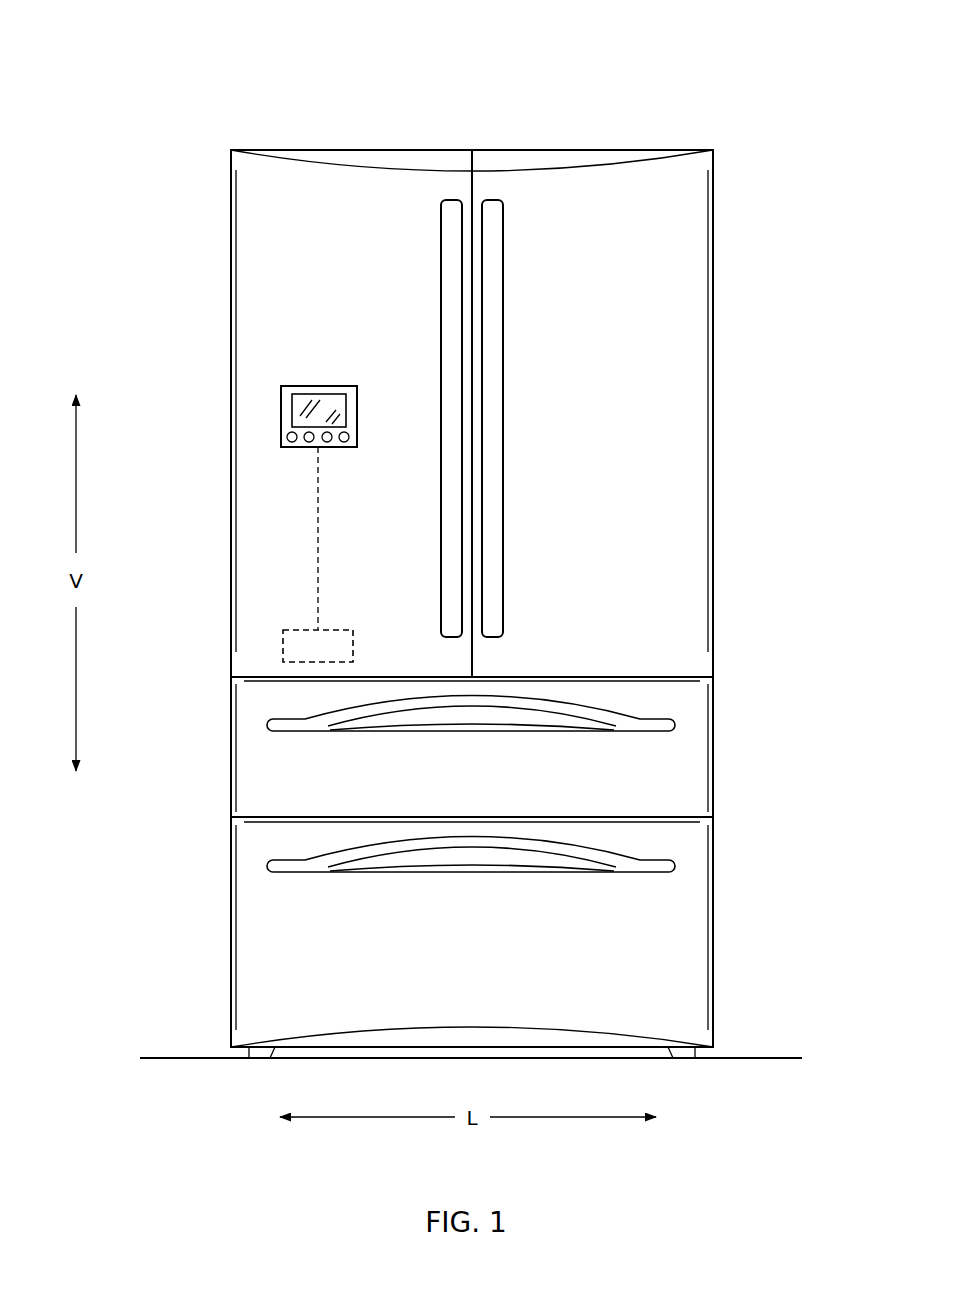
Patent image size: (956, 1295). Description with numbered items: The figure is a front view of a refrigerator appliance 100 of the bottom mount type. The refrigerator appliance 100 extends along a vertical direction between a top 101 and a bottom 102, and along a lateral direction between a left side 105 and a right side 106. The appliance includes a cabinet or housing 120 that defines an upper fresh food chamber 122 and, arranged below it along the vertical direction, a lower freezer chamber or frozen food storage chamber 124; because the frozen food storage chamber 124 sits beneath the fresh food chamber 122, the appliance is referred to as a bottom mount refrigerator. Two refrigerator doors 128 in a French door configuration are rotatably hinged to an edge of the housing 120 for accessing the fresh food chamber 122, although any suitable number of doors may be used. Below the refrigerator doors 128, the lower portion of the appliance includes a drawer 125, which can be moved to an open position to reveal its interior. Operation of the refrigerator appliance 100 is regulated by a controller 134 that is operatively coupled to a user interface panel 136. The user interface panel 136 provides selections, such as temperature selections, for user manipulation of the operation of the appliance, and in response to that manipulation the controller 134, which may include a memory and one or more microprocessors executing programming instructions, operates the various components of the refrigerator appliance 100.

The refrigerator appliance 100 is at (679, 96).
The top 101 is at (216, 154).
The bottom 102 is at (222, 1041).
The left side 105 is at (240, 133).
The right side 106 is at (712, 136).
The cabinet or housing 120 is at (215, 416).
The fresh food chamber 122 is at (664, 420).
The freezer chamber 124 is at (658, 886).
The drawer 125 is at (658, 777).
The refrigerator doors 128 is at (277, 265).
The controller 134 is at (282, 645).
The user interface panel 136 is at (316, 393).